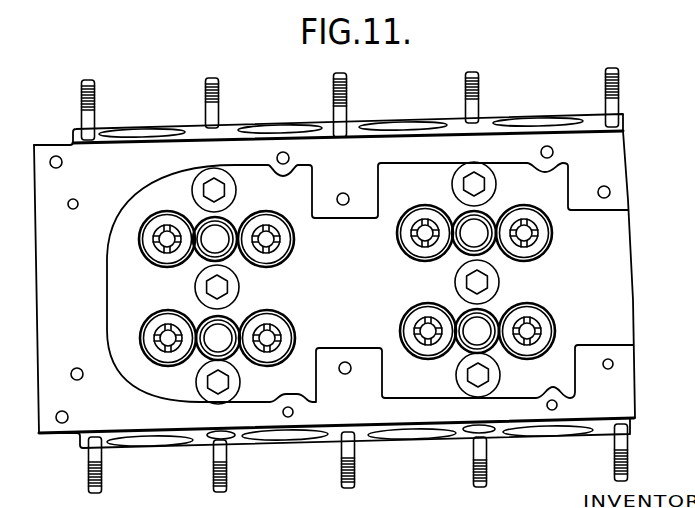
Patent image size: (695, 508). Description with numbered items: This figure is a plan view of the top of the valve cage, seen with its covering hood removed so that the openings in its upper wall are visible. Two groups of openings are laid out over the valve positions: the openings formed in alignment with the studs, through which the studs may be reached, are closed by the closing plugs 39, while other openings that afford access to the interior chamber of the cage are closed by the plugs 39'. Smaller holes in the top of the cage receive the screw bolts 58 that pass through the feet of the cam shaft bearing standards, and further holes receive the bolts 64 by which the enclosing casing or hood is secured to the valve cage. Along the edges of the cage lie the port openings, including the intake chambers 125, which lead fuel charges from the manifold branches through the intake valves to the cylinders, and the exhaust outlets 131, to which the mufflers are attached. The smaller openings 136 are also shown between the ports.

The exhaust outlets 131 is at (243, 127).
The intake chambers 125 is at (128, 444).
The small port openings 136 is at (230, 438).
The bolts 64 is at (56, 156).
The screw bolts 58 is at (343, 193).
The closing plugs 39 is at (365, 284).
The plugs 39' is at (369, 283).